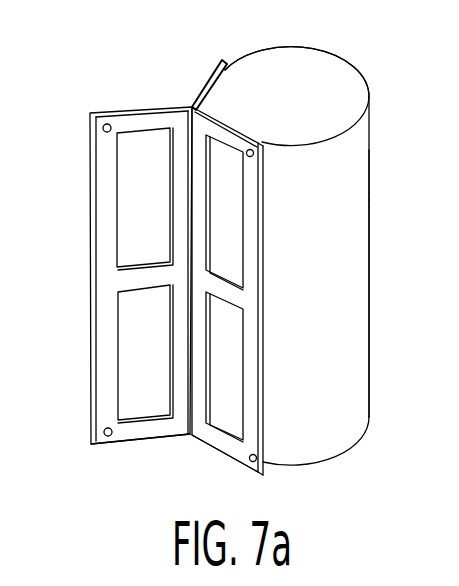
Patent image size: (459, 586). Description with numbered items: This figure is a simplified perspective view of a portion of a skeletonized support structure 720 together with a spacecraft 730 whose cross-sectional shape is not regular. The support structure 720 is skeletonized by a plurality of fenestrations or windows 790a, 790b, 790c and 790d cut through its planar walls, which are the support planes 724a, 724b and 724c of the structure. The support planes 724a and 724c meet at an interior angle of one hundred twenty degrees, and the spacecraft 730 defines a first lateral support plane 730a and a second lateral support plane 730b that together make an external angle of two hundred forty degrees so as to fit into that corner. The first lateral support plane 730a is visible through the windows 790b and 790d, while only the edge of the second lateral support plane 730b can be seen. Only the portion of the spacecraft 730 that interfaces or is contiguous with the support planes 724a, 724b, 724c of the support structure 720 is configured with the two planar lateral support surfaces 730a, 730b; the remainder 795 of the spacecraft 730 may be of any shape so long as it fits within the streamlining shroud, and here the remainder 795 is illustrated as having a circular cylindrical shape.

The support structure 720 is at (217, 445).
The support plane 724a is at (250, 445).
The support plane 724b is at (100, 390).
The support plane 724c is at (200, 84).
The spacecraft 730 is at (357, 415).
The first lateral support plane 730a is at (227, 178).
The second lateral support plane 730b is at (219, 63).
The window 790a is at (140, 143).
The window 790b is at (229, 155).
The window 790c is at (128, 353).
The window 790d is at (220, 407).
The remainder 795 is at (357, 277).